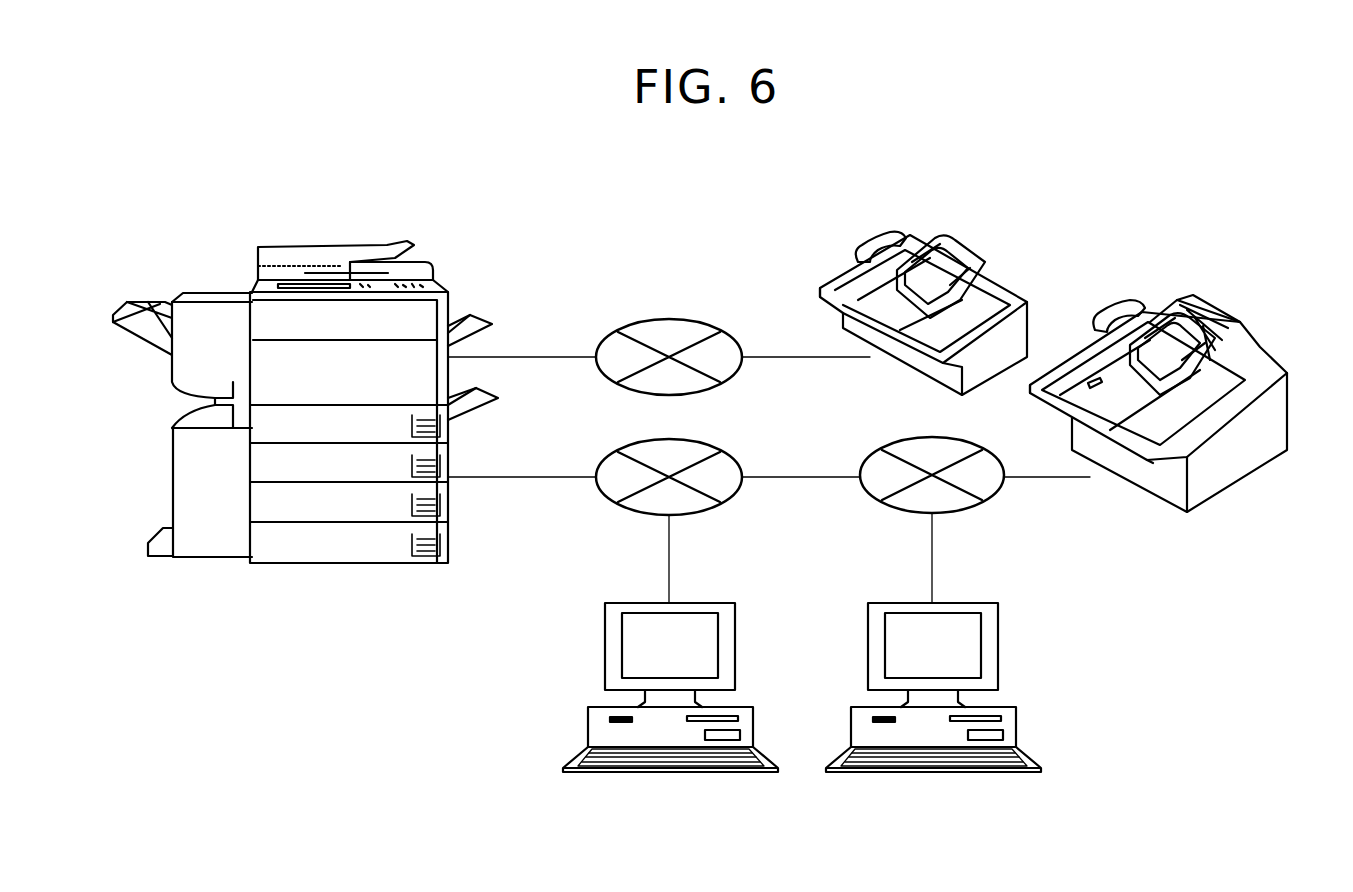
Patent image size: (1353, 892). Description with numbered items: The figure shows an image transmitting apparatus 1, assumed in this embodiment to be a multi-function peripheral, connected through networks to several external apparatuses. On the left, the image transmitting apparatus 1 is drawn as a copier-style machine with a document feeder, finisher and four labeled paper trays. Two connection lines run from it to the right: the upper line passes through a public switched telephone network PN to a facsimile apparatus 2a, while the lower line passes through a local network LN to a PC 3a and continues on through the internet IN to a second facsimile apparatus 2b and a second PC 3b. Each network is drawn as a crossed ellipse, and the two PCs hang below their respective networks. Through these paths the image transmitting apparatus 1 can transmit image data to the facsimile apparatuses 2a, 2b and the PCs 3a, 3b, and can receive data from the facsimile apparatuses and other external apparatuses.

The image transmitting apparatus 1 is at (330, 248).
The public switched telephone network PN is at (702, 322).
The local network LN is at (702, 442).
The internet IN is at (898, 440).
The facsimile apparatus 2a is at (972, 252).
The facsimile apparatus 2b is at (1218, 312).
The PC 3a is at (702, 603).
The PC 3b is at (965, 603).